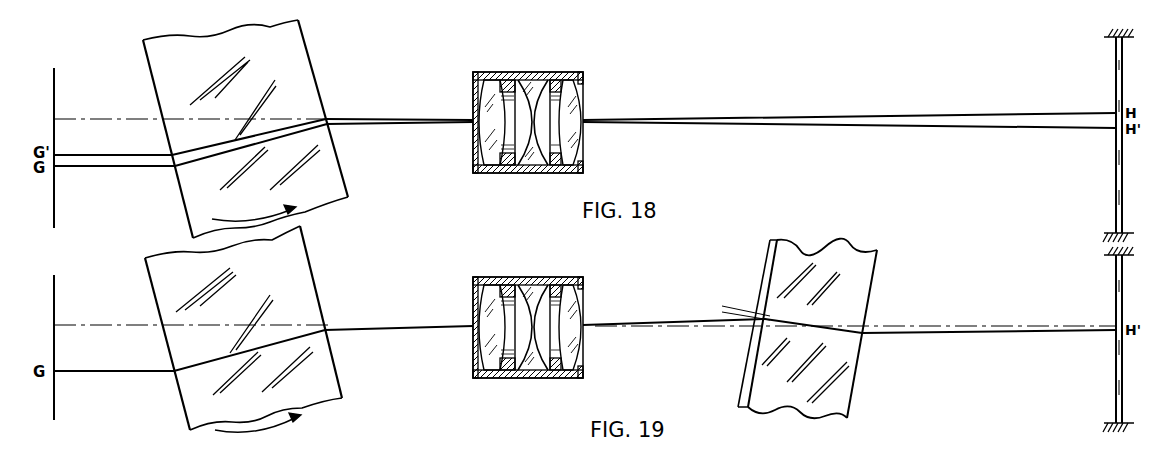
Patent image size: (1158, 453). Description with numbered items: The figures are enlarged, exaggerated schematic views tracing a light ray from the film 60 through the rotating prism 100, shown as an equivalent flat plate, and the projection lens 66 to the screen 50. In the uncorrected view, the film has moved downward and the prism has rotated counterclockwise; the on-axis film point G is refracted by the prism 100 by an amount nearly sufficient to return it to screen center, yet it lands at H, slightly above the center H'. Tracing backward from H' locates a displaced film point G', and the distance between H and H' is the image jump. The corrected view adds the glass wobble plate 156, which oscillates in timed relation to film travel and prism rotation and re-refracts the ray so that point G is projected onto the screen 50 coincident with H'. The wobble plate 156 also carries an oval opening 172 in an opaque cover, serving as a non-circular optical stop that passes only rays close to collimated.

In FIG. 18, the screen 50 is at (1116, 176).
In FIG. 19, the screen 50 is at (1114, 396).
In FIG. 18, the film 60 is at (54, 207).
In FIG. 19, the film 60 is at (54, 405).
In FIG. 18, the projection lens 66 is at (563, 72).
In FIG. 19, the projection lens 66 is at (553, 277).
In FIG. 18, the prism 100 is at (345, 170).
In FIG. 19, the prism 100 is at (315, 288).
In FIG. 19, the wobble plate 156 is at (840, 418).
In FIG. 19, the oval opening 172 is at (752, 335).